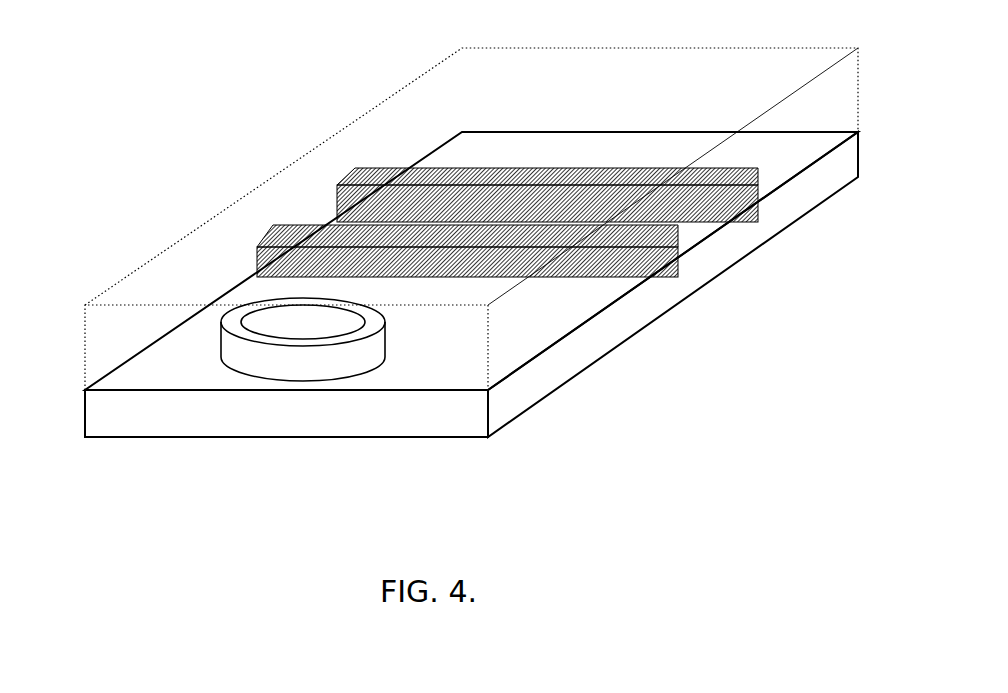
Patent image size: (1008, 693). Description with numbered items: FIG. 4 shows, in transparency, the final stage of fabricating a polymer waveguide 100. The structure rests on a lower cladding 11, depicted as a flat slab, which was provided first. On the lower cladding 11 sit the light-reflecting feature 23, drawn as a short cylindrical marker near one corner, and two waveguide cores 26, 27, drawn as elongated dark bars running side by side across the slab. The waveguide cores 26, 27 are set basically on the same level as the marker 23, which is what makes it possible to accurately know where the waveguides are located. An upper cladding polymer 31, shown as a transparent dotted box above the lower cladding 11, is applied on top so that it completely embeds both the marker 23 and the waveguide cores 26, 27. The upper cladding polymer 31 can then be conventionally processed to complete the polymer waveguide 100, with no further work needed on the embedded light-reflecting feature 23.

The polymer waveguide 100 is at (471, 279).
The lower cladding 11 is at (635, 332).
The light-reflecting feature 23 is at (282, 370).
The waveguide core 26 is at (657, 248).
The waveguide core 27 is at (680, 193).
The upper cladding polymer 31 is at (548, 313).